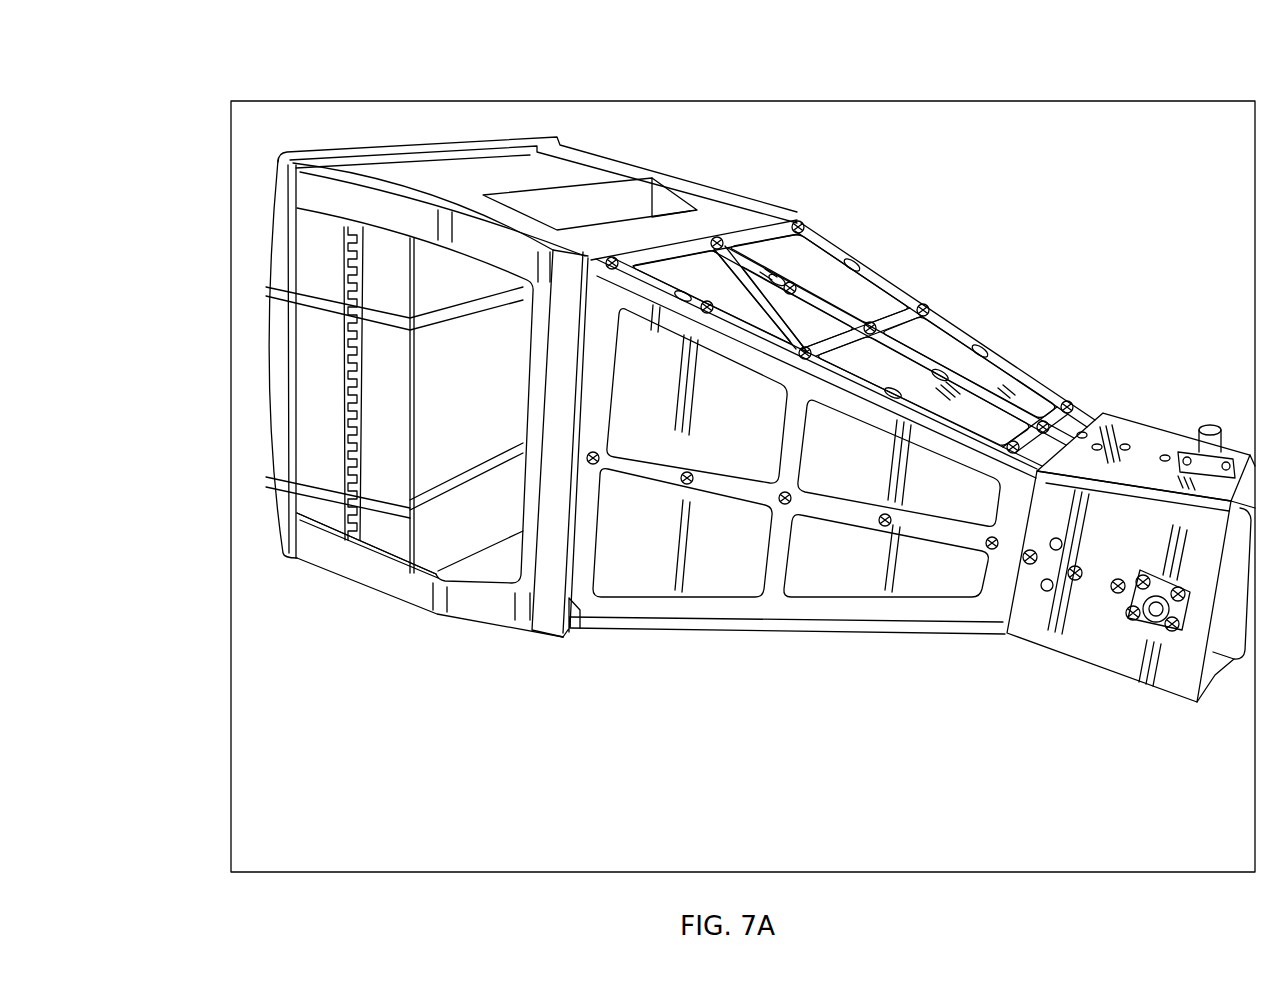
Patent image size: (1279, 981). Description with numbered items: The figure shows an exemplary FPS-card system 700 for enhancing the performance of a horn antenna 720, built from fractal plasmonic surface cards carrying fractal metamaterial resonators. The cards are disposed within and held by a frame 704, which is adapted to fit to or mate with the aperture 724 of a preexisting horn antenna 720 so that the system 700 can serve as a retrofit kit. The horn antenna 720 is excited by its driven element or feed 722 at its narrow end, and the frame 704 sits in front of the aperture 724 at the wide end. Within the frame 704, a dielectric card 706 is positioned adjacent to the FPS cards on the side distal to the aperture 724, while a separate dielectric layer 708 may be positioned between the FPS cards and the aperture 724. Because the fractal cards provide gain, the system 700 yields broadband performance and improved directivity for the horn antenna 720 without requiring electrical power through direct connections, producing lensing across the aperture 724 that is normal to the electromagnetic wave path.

The FPS-card system 700 is at (260, 58).
The frame 704 is at (418, 594).
The dielectric card 706 is at (322, 346).
The dielectric layer 708 is at (453, 528).
The horn antenna 720 is at (828, 612).
The driven element/feed 722 is at (1088, 650).
The aperture 724 is at (570, 607).